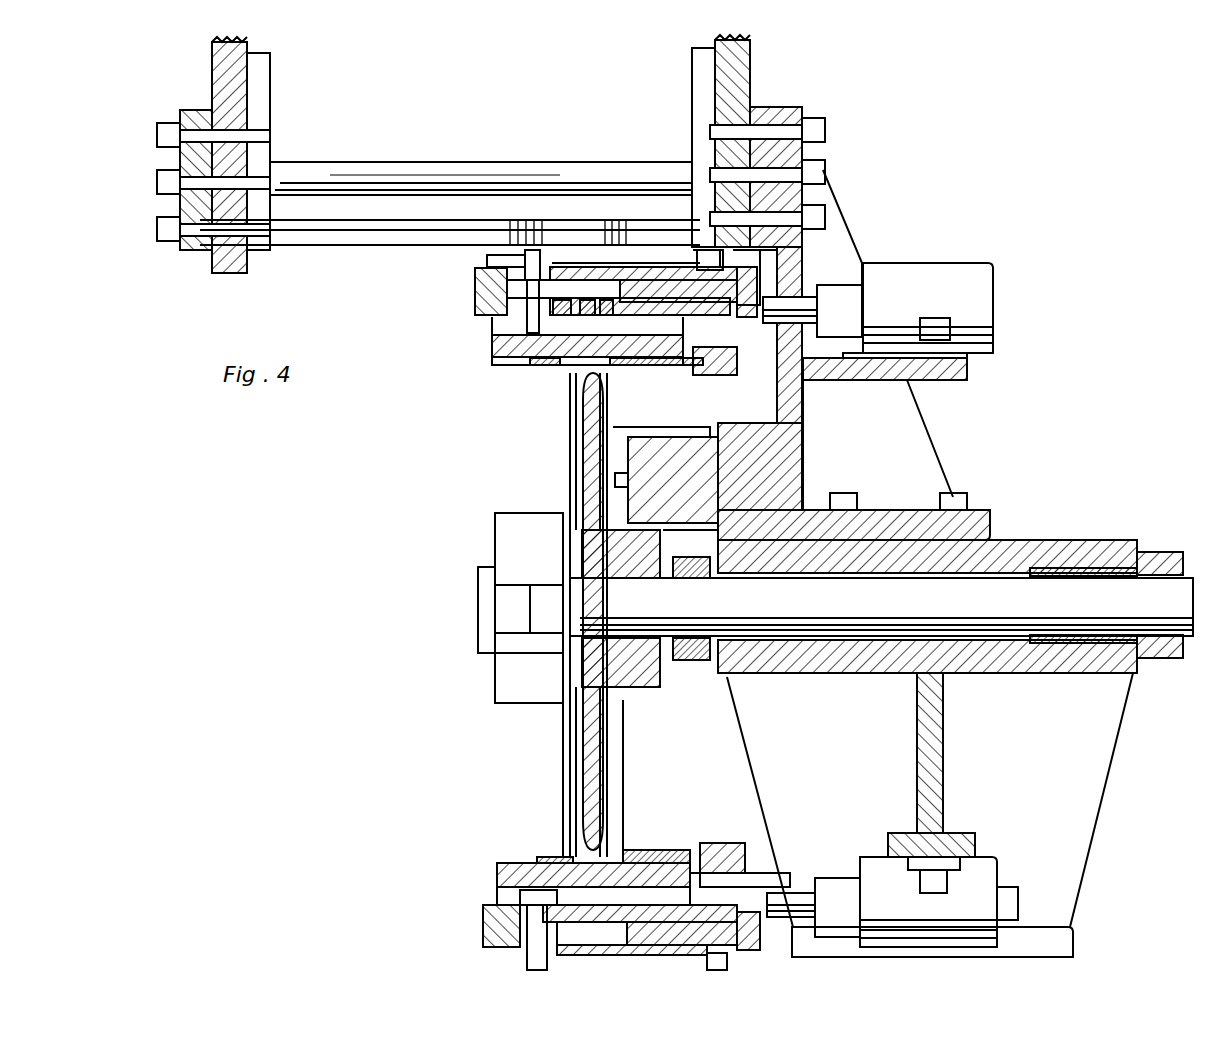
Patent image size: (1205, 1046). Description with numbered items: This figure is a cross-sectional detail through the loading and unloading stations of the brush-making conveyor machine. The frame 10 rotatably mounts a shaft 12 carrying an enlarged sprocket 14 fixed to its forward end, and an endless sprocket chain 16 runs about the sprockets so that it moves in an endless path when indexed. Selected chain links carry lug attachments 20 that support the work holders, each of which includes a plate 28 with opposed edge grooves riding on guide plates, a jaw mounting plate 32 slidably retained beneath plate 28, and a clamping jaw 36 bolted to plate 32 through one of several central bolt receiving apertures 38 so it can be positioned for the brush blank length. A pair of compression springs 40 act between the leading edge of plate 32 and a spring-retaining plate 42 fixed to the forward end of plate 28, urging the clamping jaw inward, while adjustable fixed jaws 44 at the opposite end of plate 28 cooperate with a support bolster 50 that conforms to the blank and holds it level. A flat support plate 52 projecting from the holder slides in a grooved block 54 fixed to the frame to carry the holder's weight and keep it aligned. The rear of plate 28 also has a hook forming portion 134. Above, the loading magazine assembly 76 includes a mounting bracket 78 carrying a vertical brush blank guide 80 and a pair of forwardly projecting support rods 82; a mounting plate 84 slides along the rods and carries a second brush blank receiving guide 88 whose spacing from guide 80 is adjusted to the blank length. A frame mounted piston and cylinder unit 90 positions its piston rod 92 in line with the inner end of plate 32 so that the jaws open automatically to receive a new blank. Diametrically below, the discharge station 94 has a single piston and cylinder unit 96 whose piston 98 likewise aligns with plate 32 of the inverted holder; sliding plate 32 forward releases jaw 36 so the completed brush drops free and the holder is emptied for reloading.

The frame 10 is at (1117, 760).
The shaft 12 is at (982, 592).
The sprocket 14 is at (598, 740).
The sprocket chain 16 is at (560, 758).
The lug attachment 20 is at (545, 358).
The plate 28 is at (697, 310).
The plate 32 is at (500, 330).
The clamping jaw 36 is at (525, 256).
The bolt receiving aperture 38 is at (590, 316).
The compression spring 40 is at (492, 312).
The spring-retaining plate 42 is at (480, 292).
The fixed jaw 44 is at (700, 262).
The support bolster 50 is at (580, 270).
The support plate 52 is at (670, 366).
The grooved block 54 is at (730, 376).
The loading magazine assembly 76 is at (395, 270).
The mounting bracket 78 is at (800, 113).
The brush blank guide 80 is at (730, 80).
The support rod 82 is at (430, 172).
The mounting plate 84 is at (190, 250).
The brush blank receiving guide 88 is at (262, 92).
The piston and cylinder unit 90 is at (878, 265).
The piston rod 92 is at (792, 300).
The discharge station 94 is at (750, 787).
The piston and cylinder unit 96 is at (918, 912).
The piston 98 is at (782, 890).
The hook forming portion 134 is at (787, 247).